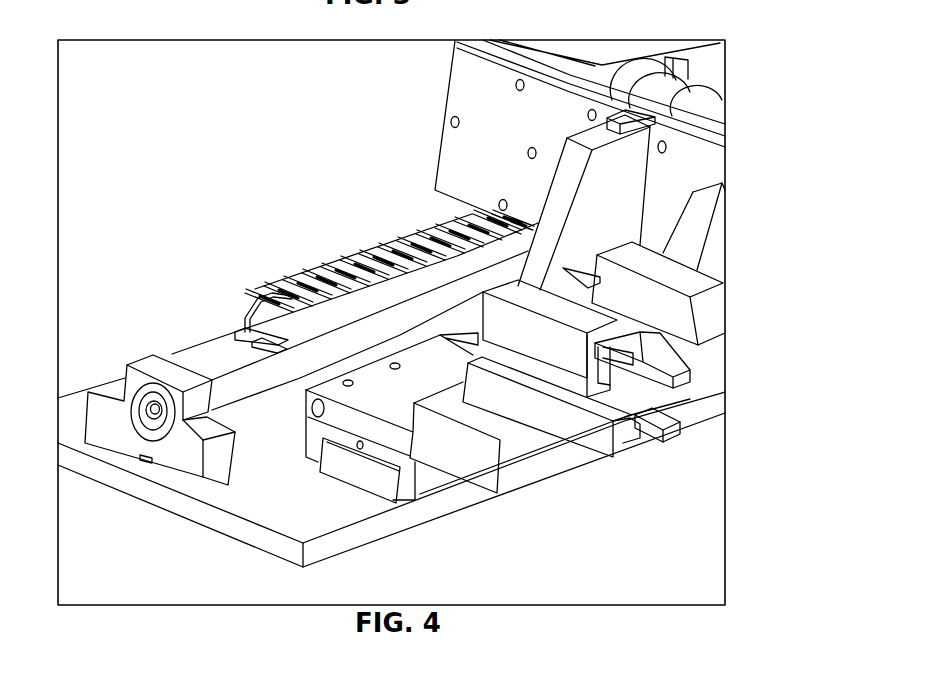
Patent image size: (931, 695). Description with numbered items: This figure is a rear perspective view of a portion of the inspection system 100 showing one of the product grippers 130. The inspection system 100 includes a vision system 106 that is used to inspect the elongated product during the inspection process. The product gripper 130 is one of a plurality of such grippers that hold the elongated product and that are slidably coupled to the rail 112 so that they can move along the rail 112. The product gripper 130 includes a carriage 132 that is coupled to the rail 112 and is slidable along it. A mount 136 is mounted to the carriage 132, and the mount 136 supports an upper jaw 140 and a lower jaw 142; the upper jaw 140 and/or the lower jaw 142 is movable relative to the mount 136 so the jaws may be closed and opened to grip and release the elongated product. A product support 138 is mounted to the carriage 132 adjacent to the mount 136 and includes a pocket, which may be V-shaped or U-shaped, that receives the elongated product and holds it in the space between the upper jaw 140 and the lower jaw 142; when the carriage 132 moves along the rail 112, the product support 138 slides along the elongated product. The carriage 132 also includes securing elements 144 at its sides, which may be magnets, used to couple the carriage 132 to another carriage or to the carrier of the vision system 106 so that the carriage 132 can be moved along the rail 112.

The inspection system 100 is at (287, 68).
The vision system 106 is at (432, 94).
The rail 112 is at (362, 470).
The product gripper 130 is at (581, 490).
The carriage 132 is at (463, 458).
The mount 136 is at (507, 325).
The product support 138 is at (593, 437).
The upper jaw 140 is at (677, 358).
The lower jaw 142 is at (665, 445).
The securing elements 144 is at (313, 410).